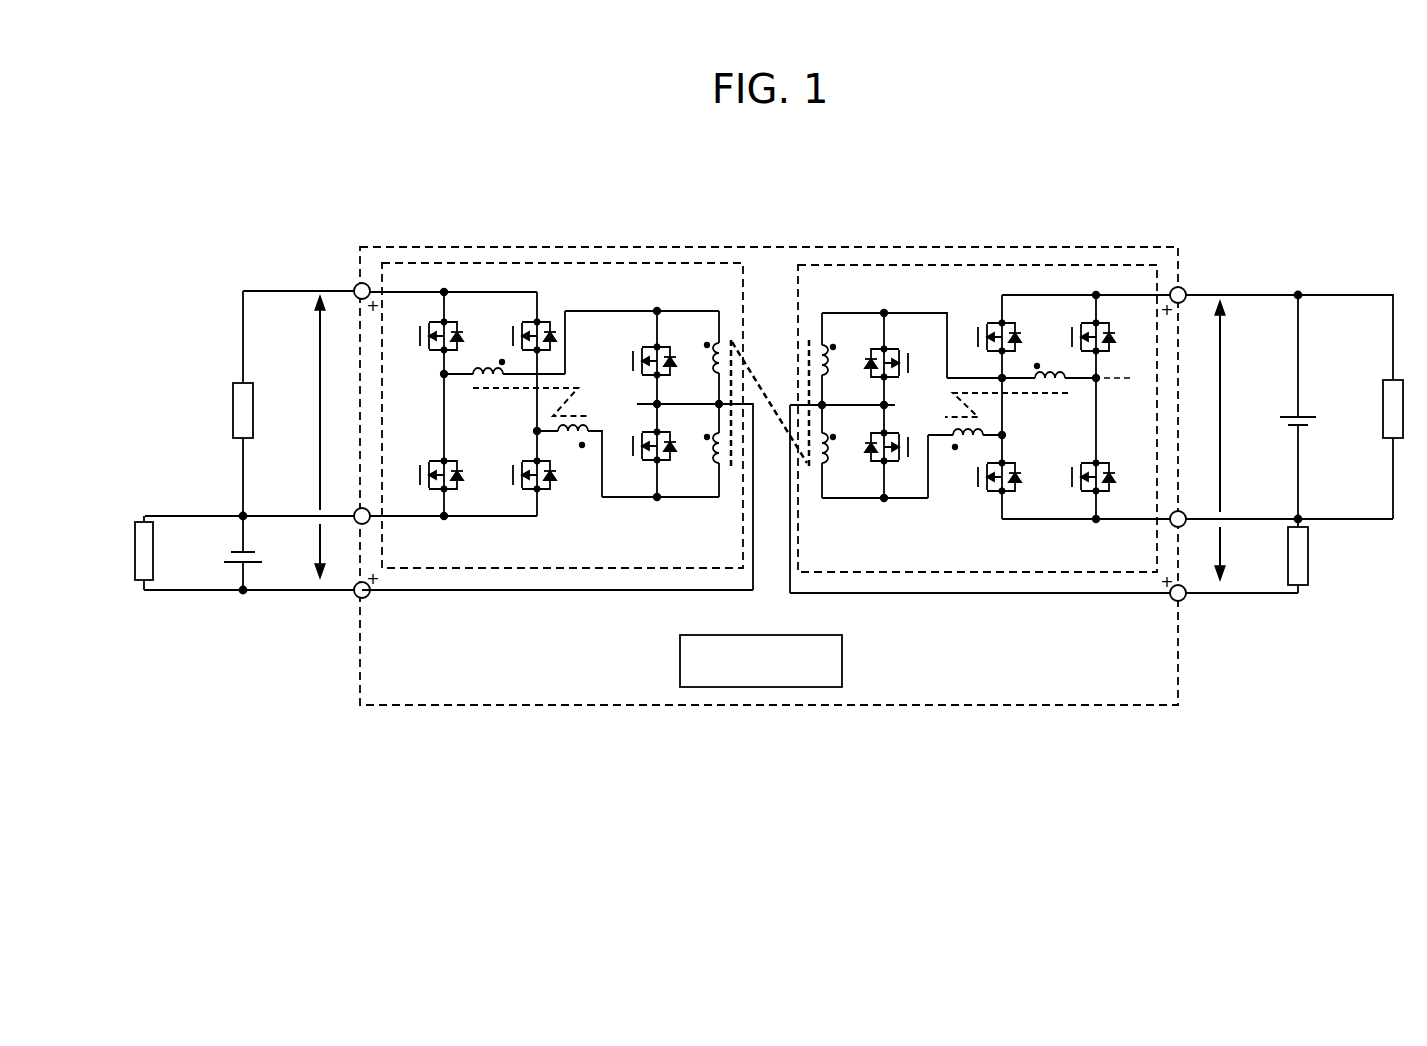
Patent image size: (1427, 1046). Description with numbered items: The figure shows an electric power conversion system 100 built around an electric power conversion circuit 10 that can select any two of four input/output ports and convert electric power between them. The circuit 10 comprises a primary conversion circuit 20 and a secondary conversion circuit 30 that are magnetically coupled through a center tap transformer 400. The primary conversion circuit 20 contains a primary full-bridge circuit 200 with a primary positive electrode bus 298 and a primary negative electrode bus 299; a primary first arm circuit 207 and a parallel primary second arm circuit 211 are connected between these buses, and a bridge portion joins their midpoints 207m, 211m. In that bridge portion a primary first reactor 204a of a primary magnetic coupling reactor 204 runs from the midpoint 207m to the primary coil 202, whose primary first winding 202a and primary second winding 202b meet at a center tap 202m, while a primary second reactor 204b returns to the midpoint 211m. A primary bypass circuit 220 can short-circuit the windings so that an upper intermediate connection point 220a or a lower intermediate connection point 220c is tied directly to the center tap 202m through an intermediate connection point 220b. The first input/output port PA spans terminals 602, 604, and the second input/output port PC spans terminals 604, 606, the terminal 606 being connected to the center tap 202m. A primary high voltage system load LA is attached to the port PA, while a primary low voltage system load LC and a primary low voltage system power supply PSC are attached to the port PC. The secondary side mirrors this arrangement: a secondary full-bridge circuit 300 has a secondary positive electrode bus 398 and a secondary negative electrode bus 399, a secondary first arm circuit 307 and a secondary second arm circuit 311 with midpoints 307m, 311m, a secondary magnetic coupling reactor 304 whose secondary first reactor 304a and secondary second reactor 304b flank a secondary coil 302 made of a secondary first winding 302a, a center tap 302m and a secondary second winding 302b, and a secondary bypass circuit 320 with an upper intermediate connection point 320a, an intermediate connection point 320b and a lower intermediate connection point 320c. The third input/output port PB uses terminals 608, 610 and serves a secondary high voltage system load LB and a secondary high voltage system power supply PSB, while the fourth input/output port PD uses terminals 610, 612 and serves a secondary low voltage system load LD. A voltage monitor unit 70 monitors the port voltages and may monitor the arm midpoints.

The electric power conversion system 100 is at (215, 175).
The electric power conversion circuit 10 is at (1103, 247).
The primary conversion circuit 20 is at (545, 250).
The secondary conversion circuit 30 is at (996, 252).
The primary full-bridge circuit 200 is at (625, 262).
The secondary full-bridge circuit 300 is at (917, 265).
The primary bypass circuit 220 is at (659, 397).
The upper intermediate connection point 220a is at (657, 310).
The intermediate connection point 220b is at (655, 404).
The lower intermediate connection point 220c is at (657, 499).
The primary coil 202 is at (701, 370).
The primary first winding 202a is at (708, 345).
The center tap 202m is at (718, 404).
The primary second winding 202b is at (713, 470).
The transformer 400 is at (776, 383).
The secondary coil 302 is at (848, 373).
The secondary first winding 302a is at (835, 348).
The center tap 302m is at (823, 405).
The secondary second winding 302b is at (832, 470).
The secondary bypass circuit 320 is at (878, 399).
The upper intermediate connection point 320a is at (886, 312).
The intermediate connection point 320b is at (888, 405).
The lower intermediate connection point 320c is at (884, 500).
The primary positive electrode bus 298 is at (402, 292).
The primary negative electrode bus 299 is at (390, 519).
The secondary positive electrode bus 398 is at (1098, 295).
The secondary negative electrode bus 399 is at (1122, 520).
The primary magnetic coupling reactor 204 is at (526, 397).
The primary first reactor 204a is at (483, 366).
The primary second reactor 204b is at (578, 442).
The secondary magnetic coupling reactor 304 is at (1000, 421).
The secondary first reactor 304a is at (1045, 372).
The secondary second reactor 304b is at (928, 500).
The primary first arm circuit 207 is at (430, 503).
The midpoint of the primary first arm circuit 207m is at (444, 376).
The primary second arm circuit 211 is at (522, 503).
The midpoint of the primary second arm circuit 211m is at (537, 432).
The secondary first arm circuit 307 is at (977, 503).
The midpoint of the secondary first arm circuit 307m is at (1003, 436).
The secondary second arm circuit 311 is at (1067, 503).
The midpoint of the secondary second arm circuit 311m is at (1097, 378).
The high-potential terminal 602 is at (354, 289).
The low-potential terminal 604 is at (357, 509).
The high-potential terminal 606 is at (354, 596).
The high-potential terminal 608 is at (1187, 291).
The low-potential terminal 610 is at (1183, 512).
The high-potential terminal 612 is at (1186, 599).
The voltage monitor unit 70 is at (850, 662).
The primary high voltage system load LA is at (235, 383).
The secondary high voltage system load LB is at (1383, 385).
The primary low voltage system load LC is at (144, 522).
The secondary low voltage system load LD is at (1308, 560).
The primary low voltage system power supply PSC is at (236, 552).
The secondary high voltage system power supply PSB is at (1303, 426).
The first input/output port PA is at (318, 410).
The third input/output port PB is at (1222, 422).
The second input/output port PC is at (318, 545).
The fourth input/output port PD is at (1222, 548).